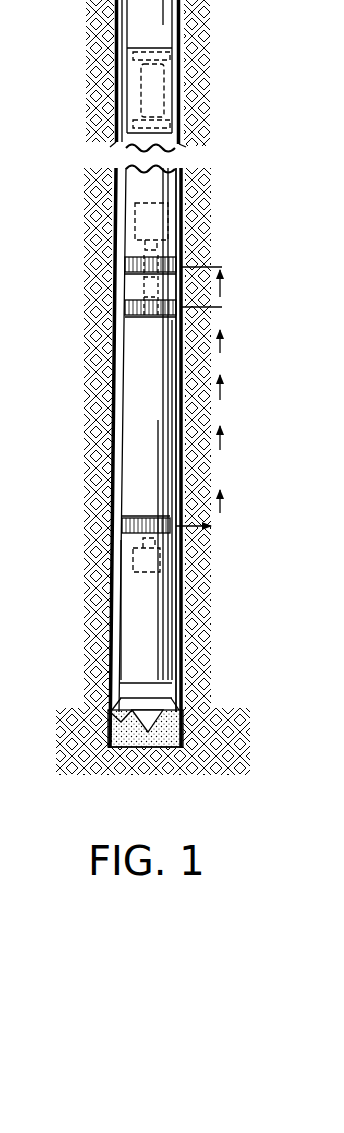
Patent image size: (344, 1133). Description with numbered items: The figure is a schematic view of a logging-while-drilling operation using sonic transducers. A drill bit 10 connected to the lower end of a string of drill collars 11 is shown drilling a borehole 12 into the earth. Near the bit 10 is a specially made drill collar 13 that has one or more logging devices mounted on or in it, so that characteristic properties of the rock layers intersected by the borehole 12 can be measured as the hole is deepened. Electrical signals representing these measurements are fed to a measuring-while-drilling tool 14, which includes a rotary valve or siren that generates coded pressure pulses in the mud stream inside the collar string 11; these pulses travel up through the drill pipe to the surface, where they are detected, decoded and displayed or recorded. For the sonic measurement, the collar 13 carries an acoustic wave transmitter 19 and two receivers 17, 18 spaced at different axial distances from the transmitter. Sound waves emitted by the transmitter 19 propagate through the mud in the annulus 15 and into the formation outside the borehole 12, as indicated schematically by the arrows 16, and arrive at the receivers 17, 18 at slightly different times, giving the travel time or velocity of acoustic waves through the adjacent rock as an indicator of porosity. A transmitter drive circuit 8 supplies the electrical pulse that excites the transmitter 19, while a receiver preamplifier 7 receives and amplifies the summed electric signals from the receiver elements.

The receiver preamplifier 7 is at (197, 213).
The transmitter drive circuit 8 is at (182, 564).
The drill bit 10 is at (116, 722).
The string of drill collars 11 is at (136, 603).
The borehole 12 is at (110, 677).
The drill collar 13 is at (130, 372).
The measuring-while-drilling tool 14 is at (143, 85).
The annulus 15 is at (185, 468).
The arrows 16 is at (223, 394).
The receiver 17 is at (128, 315).
The receiver 18 is at (128, 271).
The acoustic wave transmitter 19 is at (122, 526).